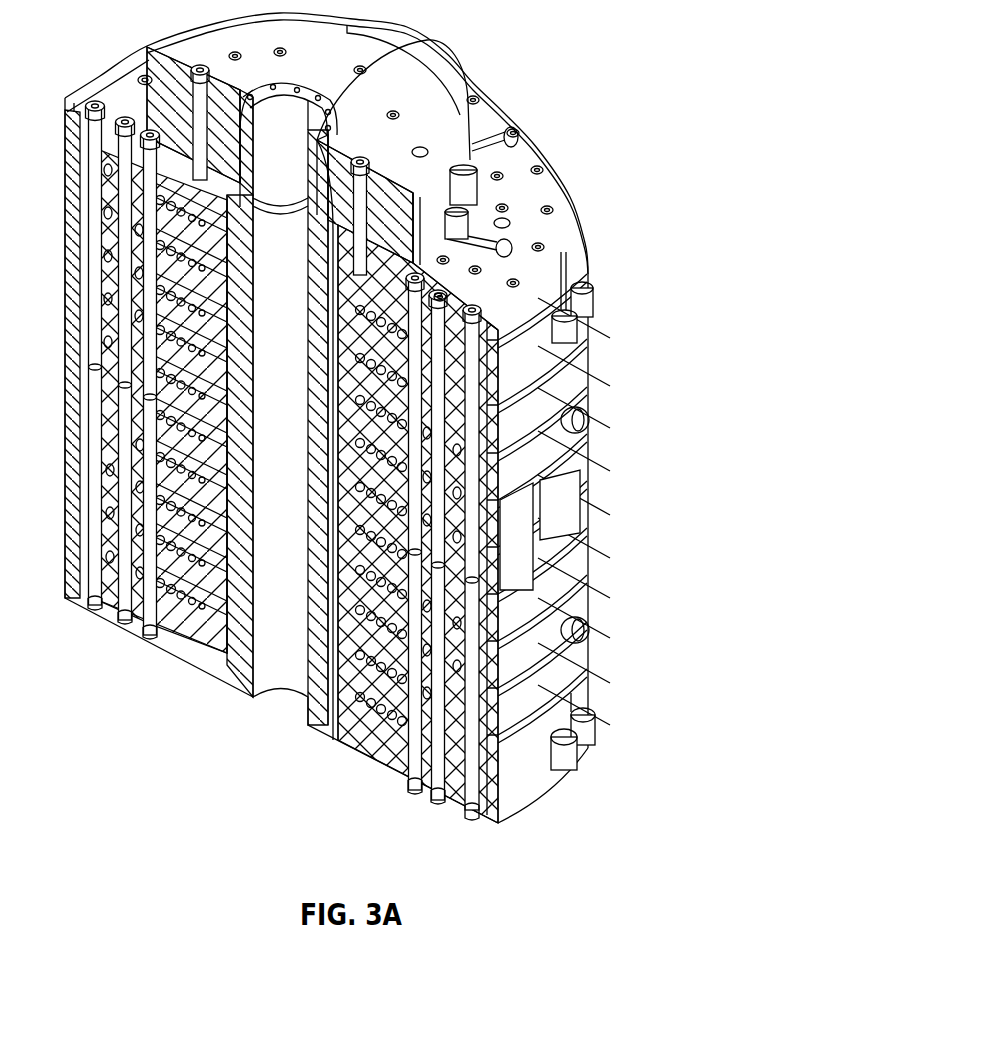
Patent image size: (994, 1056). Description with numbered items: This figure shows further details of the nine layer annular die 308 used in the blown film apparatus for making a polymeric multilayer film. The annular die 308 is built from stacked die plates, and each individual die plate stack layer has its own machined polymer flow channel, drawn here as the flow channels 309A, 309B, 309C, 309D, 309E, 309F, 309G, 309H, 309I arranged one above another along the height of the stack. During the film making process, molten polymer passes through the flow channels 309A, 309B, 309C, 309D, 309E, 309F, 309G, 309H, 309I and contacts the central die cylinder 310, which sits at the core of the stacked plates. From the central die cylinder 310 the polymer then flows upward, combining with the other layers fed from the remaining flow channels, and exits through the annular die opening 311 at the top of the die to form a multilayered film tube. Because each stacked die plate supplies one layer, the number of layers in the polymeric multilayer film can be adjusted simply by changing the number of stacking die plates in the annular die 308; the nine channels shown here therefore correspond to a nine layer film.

The annular die 308 is at (597, 140).
The machined polymer flow channel 309A is at (414, 336).
The machined polymer flow channel 309B is at (436, 382).
The machined polymer flow channel 309C is at (414, 424).
The machined polymer flow channel 309D is at (411, 466).
The machined polymer flow channel 309E is at (414, 508).
The machined polymer flow channel 309F is at (414, 593).
The machined polymer flow channel 309G is at (414, 634).
The machined polymer flow channel 309H is at (414, 678).
The machined polymer flow channel 309I is at (402, 735).
The central die cylinder 310 is at (221, 680).
The annular die opening 311 is at (347, 103).